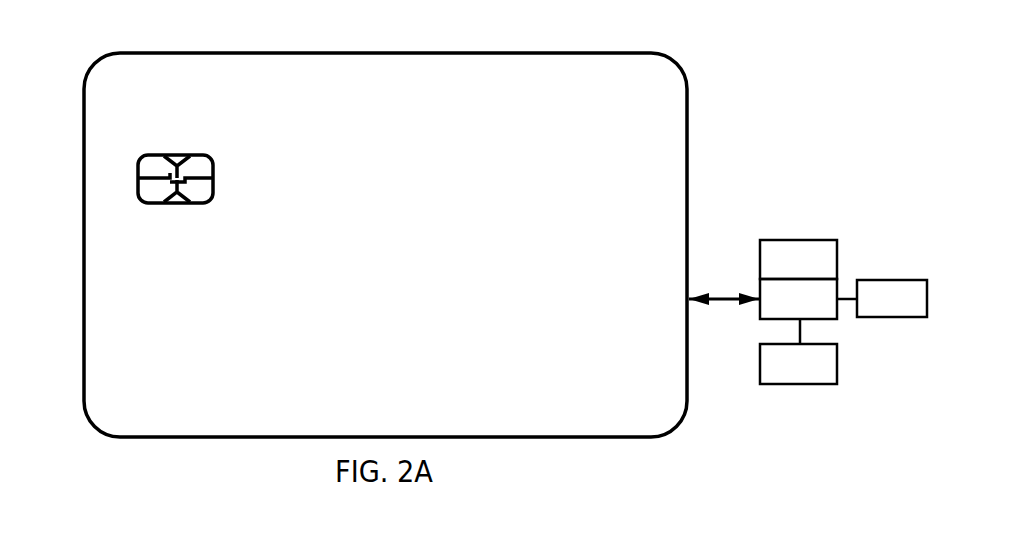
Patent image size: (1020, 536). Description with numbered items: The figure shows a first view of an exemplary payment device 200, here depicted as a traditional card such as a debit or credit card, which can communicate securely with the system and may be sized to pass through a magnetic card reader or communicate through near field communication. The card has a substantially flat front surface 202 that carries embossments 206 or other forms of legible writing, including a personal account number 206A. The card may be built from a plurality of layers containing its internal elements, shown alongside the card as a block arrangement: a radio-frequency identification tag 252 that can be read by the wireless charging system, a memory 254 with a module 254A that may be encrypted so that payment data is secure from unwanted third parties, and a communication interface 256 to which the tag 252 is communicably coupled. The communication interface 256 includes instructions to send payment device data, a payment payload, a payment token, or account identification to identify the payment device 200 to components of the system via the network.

The payment device 200 is at (414, 223).
The front surface 202 is at (667, 164).
The personal account number (PAN) 206A is at (105, 292).
The embossments 206 is at (598, 398).
The radio-frequency identification (RFID) tag 252 is at (798, 259).
The memory 254 is at (763, 299).
The module 254A is at (882, 298).
The communication interface 256 is at (798, 351).